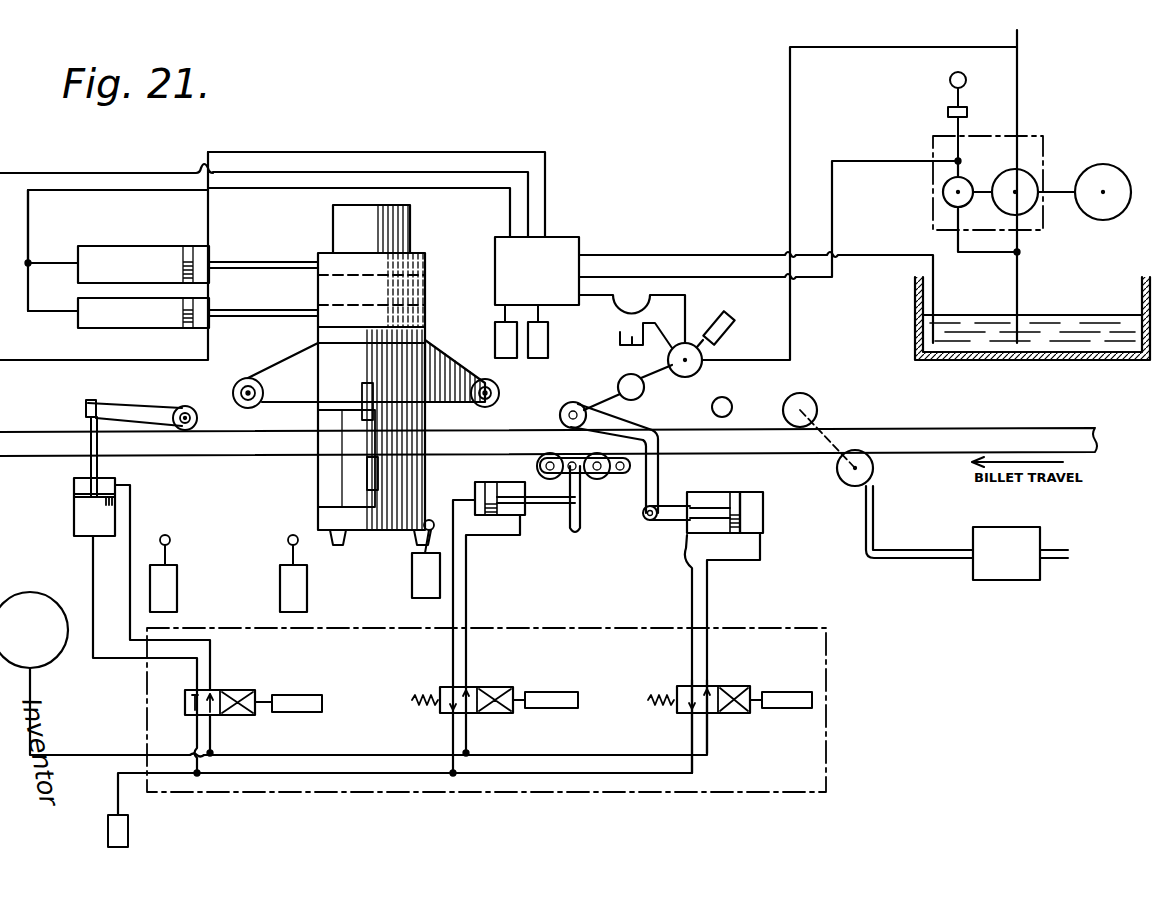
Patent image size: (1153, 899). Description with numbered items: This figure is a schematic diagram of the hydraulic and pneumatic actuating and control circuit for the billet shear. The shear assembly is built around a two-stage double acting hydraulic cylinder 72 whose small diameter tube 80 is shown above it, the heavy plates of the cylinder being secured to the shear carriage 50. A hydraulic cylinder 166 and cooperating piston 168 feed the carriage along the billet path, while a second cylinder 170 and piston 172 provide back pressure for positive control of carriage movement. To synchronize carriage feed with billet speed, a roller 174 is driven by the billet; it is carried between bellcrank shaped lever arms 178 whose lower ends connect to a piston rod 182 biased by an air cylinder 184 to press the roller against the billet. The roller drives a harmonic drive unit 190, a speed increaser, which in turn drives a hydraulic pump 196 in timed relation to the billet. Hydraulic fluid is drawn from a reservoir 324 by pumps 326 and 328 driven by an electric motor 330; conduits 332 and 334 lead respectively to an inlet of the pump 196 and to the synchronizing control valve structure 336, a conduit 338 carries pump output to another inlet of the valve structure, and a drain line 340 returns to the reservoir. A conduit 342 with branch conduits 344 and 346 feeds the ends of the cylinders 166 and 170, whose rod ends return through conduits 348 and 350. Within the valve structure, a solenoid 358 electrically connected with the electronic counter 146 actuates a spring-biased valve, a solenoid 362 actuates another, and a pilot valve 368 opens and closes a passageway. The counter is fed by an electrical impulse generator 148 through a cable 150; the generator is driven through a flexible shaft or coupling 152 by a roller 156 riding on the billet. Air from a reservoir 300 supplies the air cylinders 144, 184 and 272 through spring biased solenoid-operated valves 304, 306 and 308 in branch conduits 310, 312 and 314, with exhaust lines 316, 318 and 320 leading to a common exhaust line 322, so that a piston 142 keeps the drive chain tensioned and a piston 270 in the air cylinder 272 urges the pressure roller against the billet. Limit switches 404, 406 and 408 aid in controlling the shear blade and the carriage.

The shear carriage 50 is at (461, 350).
The two-stage double acting hydraulic cylinder 72 is at (410, 282).
The small diameter tube 80 is at (398, 220).
The piston 142 is at (538, 503).
The air cylinder 144 is at (500, 478).
The electronic counter 146 is at (1010, 582).
The electrical impulse generator 148 is at (873, 468).
The cable 150 is at (918, 560).
The flexible shaft or coupling 152 is at (823, 428).
The roller 156 is at (801, 397).
The hydraulic cylinder 166 is at (126, 246).
The piston 168 is at (258, 262).
The second cylinder 170 is at (156, 320).
The piston 172 is at (268, 311).
The roller 174 is at (574, 403).
The bellcrank shaped lever arms 178 is at (642, 494).
The piston rod 182 is at (707, 512).
The air cylinder 184 is at (758, 494).
The harmonic drive unit 190 is at (640, 398).
The hydraulic pump 196 is at (703, 375).
The piston 270 is at (74, 503).
The air cylinder 272 is at (74, 524).
The reservoir 300 is at (41, 594).
The solenoid-operated valve 304 is at (510, 690).
The solenoid-operated valve 306 is at (738, 686).
The solenoid-operated valve 308 is at (232, 690).
The branch conduit 310 is at (466, 653).
The branch conduit 312 is at (707, 648).
The branch conduit 314 is at (196, 628).
The exhaust line 316 is at (453, 664).
The exhaust line 318 is at (692, 660).
The exhaust line 320 is at (91, 656).
The common exhaust line 322 is at (78, 758).
The reservoir 324 is at (1065, 358).
The pump 326 is at (1025, 205).
The pump 328 is at (941, 196).
The electric motor 330 is at (1102, 168).
The conduit 332 is at (790, 181).
The conduit 334 is at (830, 203).
The synchronizing control valve structure 336 is at (569, 236).
The conduit 338 is at (602, 297).
The drain line 340 is at (668, 255).
The conduit 342 is at (241, 186).
The branch conduit 344 is at (57, 262).
The branch conduit 346 is at (49, 313).
The conduit 348 is at (313, 152).
The conduit 350 is at (133, 402).
The solenoid 358 is at (543, 350).
The solenoid 362 is at (503, 340).
The pilot valve 368 is at (90, 440).
The limit switch 404 is at (300, 588).
The limit switch 406 is at (170, 580).
The limit switch 408 is at (412, 593).